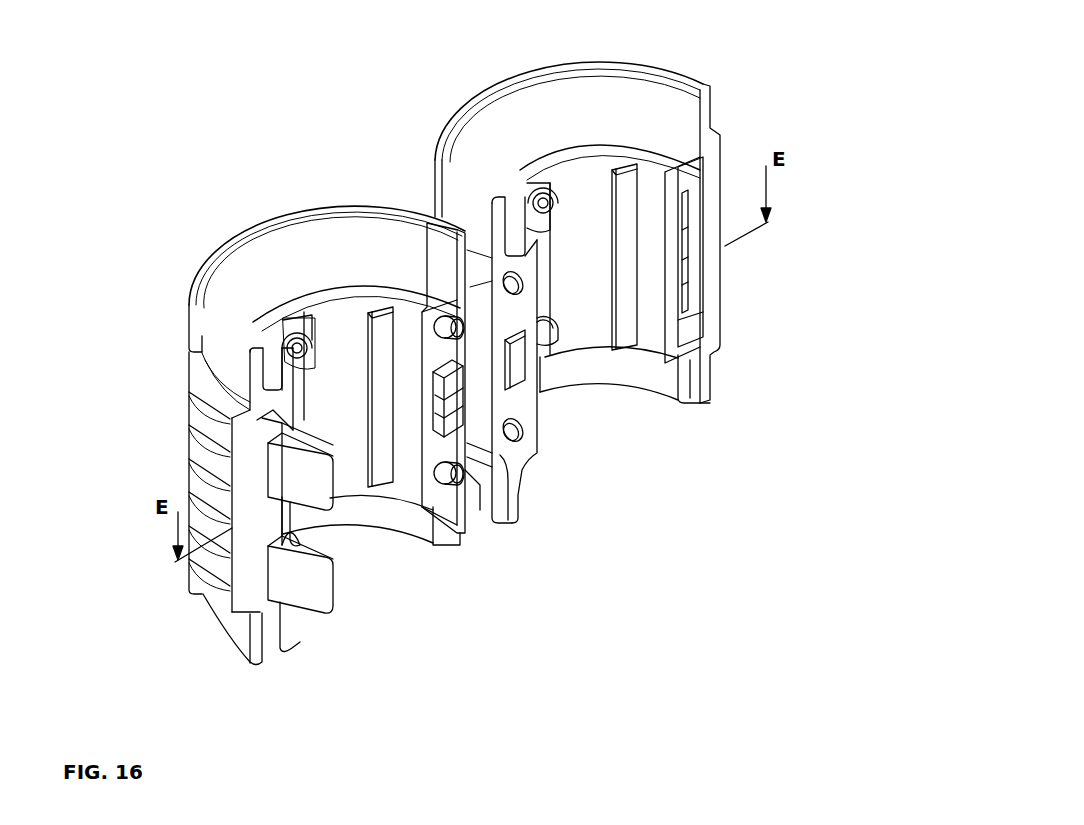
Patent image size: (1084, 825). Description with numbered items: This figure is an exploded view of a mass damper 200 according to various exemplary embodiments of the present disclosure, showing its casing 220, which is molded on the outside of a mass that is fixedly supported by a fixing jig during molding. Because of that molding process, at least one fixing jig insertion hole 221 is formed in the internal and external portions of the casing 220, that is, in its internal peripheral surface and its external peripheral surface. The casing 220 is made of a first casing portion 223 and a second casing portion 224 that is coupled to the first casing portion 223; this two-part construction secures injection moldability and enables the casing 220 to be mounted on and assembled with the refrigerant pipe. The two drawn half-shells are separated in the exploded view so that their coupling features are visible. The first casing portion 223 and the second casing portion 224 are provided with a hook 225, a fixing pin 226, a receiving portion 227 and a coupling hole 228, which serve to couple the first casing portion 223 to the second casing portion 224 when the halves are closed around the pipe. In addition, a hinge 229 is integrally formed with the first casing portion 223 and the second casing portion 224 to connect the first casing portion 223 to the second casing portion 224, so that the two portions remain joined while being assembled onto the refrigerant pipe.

The mass damper 200 is at (208, 257).
The casing 220 is at (380, 25).
The fixing jig insertion hole 221 is at (283, 338).
The first casing portion 223 is at (320, 208).
The second casing portion 224 is at (480, 113).
The hook 225 is at (300, 604).
The fixing pin 226 is at (460, 478).
The receiving portion 227 is at (686, 290).
The coupling hole 228 is at (508, 432).
The hinge 229 is at (490, 447).